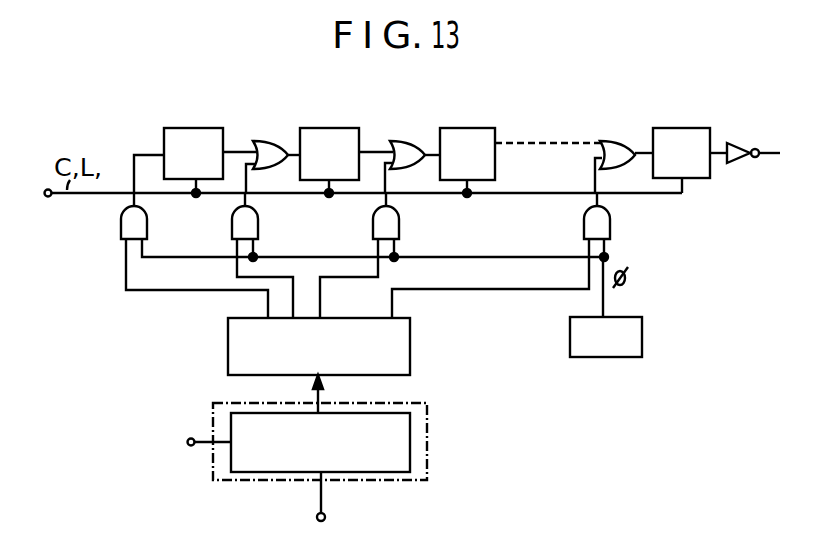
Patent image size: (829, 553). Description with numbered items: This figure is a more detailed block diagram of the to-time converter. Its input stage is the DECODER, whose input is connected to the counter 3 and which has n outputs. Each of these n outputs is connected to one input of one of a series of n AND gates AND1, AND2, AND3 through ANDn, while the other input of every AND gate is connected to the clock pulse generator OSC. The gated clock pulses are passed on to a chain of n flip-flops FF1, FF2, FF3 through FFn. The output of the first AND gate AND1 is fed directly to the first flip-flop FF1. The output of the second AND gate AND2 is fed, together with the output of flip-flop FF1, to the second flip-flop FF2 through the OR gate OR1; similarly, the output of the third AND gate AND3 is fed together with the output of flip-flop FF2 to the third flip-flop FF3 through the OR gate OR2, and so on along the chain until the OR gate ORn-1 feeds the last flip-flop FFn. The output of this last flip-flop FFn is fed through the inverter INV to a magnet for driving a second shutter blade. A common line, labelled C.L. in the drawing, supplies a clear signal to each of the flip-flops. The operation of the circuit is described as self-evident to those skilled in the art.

The counter 3 is at (427, 438).
The first flip-flop FF1 is at (193, 160).
The second flip-flop FF2 is at (329, 160).
The third flip-flop FF3 is at (467, 160).
The last flip-flop FFn is at (681, 160).
The OR gate OR1 is at (262, 141).
The OR gate OR2 is at (402, 141).
The OR gate ORn-1 is at (608, 141).
The first AND gate AND1 is at (121, 224).
The second AND gate AND2 is at (232, 224).
The third AND gate AND3 is at (373, 225).
The nth AND gate ANDn is at (584, 226).
The inverter INV is at (742, 164).
The clock pulse generator OSC is at (606, 337).
The decoder DECODER is at (319, 334).